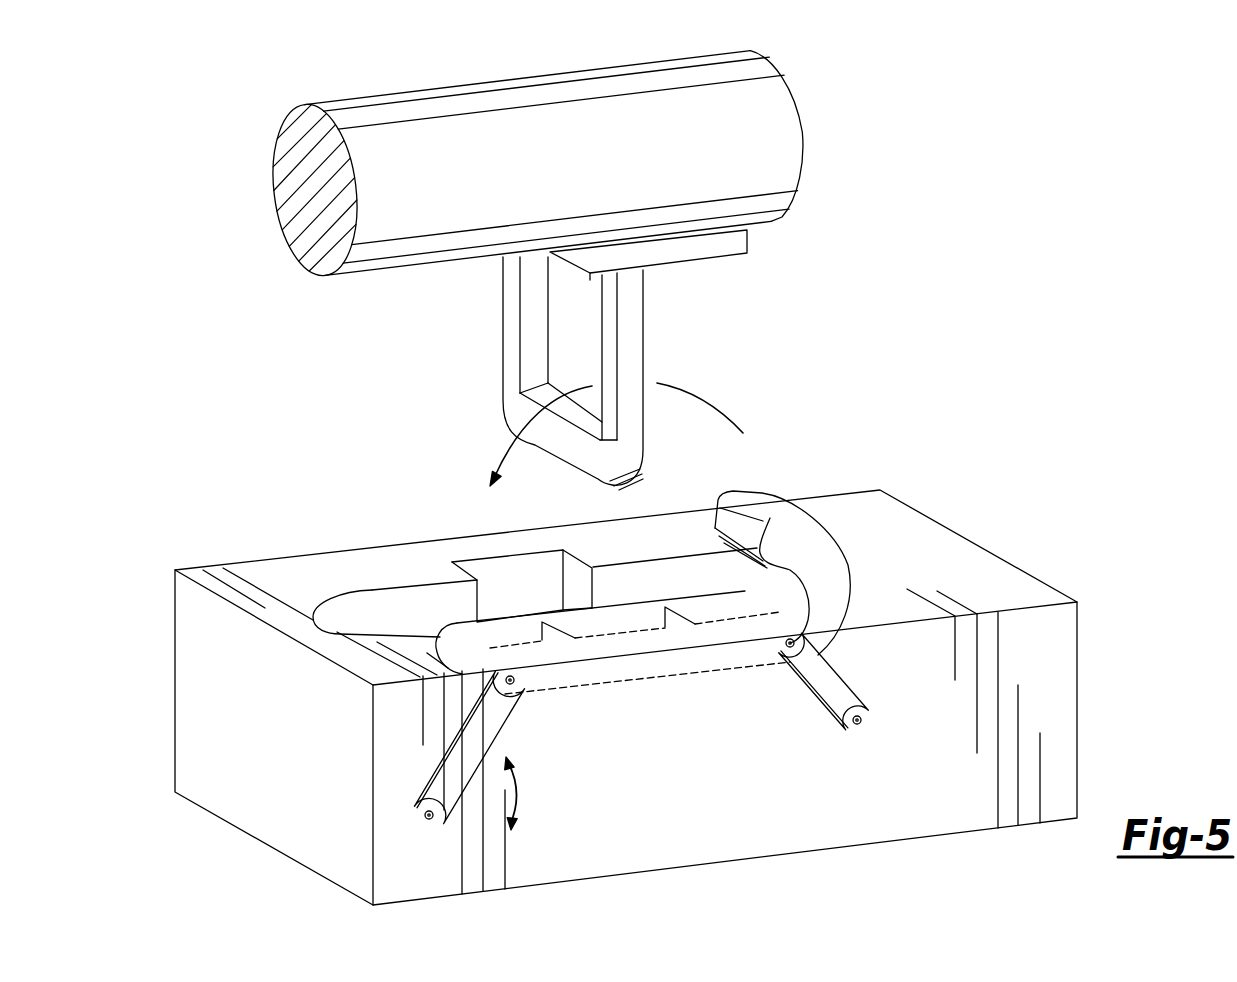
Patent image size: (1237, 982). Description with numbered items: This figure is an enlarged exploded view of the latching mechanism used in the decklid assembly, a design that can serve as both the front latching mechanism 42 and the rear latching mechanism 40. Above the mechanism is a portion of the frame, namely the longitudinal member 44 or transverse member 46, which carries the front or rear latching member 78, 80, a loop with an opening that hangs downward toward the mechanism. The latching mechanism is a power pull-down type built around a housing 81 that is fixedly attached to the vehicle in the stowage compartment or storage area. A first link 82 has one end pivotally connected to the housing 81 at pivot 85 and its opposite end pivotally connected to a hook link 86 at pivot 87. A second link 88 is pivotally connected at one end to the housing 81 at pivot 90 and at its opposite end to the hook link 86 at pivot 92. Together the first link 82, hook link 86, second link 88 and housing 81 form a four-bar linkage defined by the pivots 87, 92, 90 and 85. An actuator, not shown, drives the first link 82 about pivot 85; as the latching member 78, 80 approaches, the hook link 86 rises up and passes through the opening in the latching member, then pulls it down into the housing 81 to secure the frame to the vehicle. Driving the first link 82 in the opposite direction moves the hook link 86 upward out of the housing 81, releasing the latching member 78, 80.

The longitudinal member 44 is at (577, 148).
The transverse member 46 is at (765, 73).
The front latching member 78 is at (631, 360).
The rear latching member 80 is at (630, 336).
The front latching mechanism 42 is at (668, 650).
The rear latching mechanism 40 is at (992, 478).
The housing 81 is at (1042, 700).
The hook link 86 is at (775, 506).
The first link 82 is at (490, 722).
The pivot 87 is at (505, 672).
The pivot 85 is at (422, 822).
The second link 88 is at (817, 682).
The pivot 92 is at (790, 640).
The pivot 90 is at (867, 727).